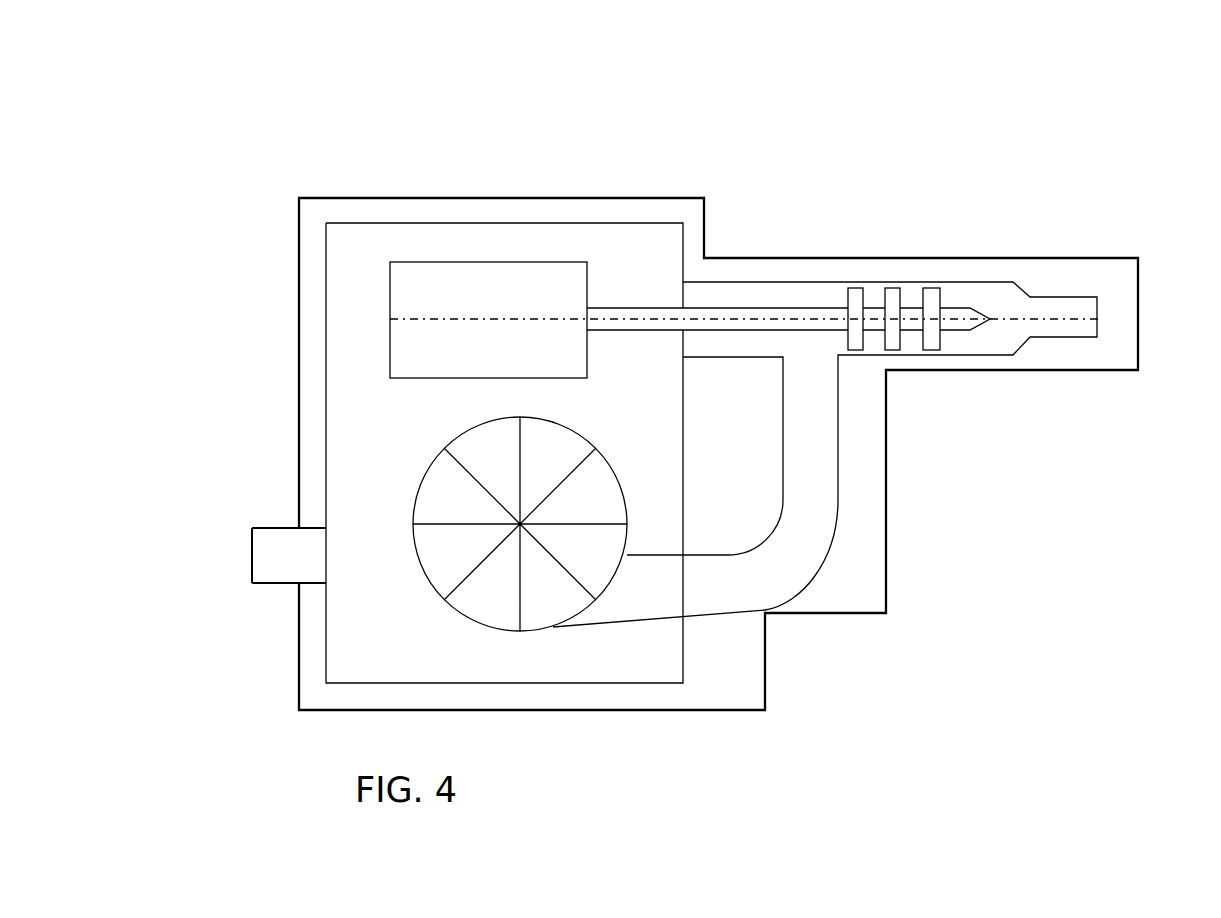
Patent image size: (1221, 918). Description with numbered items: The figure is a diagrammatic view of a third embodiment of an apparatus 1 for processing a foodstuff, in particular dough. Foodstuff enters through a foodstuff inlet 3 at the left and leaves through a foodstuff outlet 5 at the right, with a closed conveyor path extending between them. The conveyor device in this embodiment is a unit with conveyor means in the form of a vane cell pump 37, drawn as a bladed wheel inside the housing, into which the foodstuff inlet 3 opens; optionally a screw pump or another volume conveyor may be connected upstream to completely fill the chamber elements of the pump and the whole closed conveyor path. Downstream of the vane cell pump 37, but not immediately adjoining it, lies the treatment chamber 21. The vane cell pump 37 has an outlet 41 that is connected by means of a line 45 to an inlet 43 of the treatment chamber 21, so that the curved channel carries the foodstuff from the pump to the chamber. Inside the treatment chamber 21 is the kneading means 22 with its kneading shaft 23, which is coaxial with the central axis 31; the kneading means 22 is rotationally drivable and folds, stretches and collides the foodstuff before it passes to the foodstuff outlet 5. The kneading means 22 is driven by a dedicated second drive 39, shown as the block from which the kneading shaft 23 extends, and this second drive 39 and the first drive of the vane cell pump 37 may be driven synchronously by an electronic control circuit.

The apparatus 1 is at (318, 148).
The foodstuff inlet 3 is at (232, 560).
The foodstuff outlet 5 is at (1103, 325).
The treatment chamber 21 is at (942, 293).
The kneading means 22 is at (905, 298).
The kneading shaft 23 is at (729, 307).
The central axis 31 is at (809, 314).
The vane cell pump 37 is at (508, 640).
The second drive 39 is at (499, 262).
The outlet 41 is at (628, 590).
The inlet 43 is at (847, 365).
The line 45 is at (825, 503).